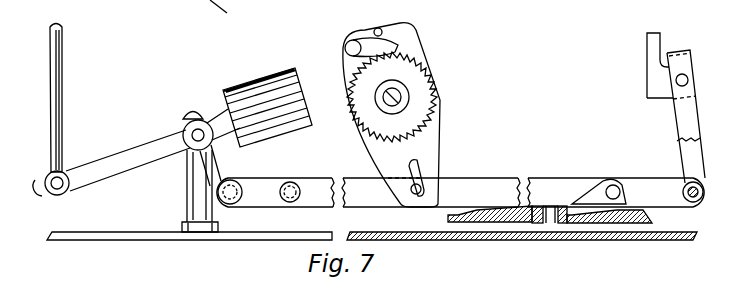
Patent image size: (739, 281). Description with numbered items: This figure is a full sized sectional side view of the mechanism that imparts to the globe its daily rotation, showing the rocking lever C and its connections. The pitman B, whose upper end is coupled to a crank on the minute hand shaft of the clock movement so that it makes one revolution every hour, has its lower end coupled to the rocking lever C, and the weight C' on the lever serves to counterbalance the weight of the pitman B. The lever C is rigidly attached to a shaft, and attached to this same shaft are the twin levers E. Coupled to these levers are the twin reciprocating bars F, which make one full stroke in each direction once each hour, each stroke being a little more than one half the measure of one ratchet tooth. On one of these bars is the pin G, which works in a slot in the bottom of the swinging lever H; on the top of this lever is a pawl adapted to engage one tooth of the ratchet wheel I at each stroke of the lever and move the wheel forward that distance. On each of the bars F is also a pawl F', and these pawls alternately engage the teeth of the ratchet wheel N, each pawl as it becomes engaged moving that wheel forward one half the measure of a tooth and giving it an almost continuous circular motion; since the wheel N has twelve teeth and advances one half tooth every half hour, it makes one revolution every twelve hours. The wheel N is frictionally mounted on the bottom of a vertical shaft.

The pitman B is at (62, 113).
The rocking lever C is at (128, 160).
The weight C' is at (267, 105).
The twin lever E is at (229, 180).
The reciprocating bar F is at (460, 192).
The pawl F' is at (599, 178).
The pin g is at (549, 205).
The pin G is at (417, 198).
The swinging lever H is at (391, 115).
The ratchet wheel I is at (392, 97).
The ratchet wheel N is at (652, 218).